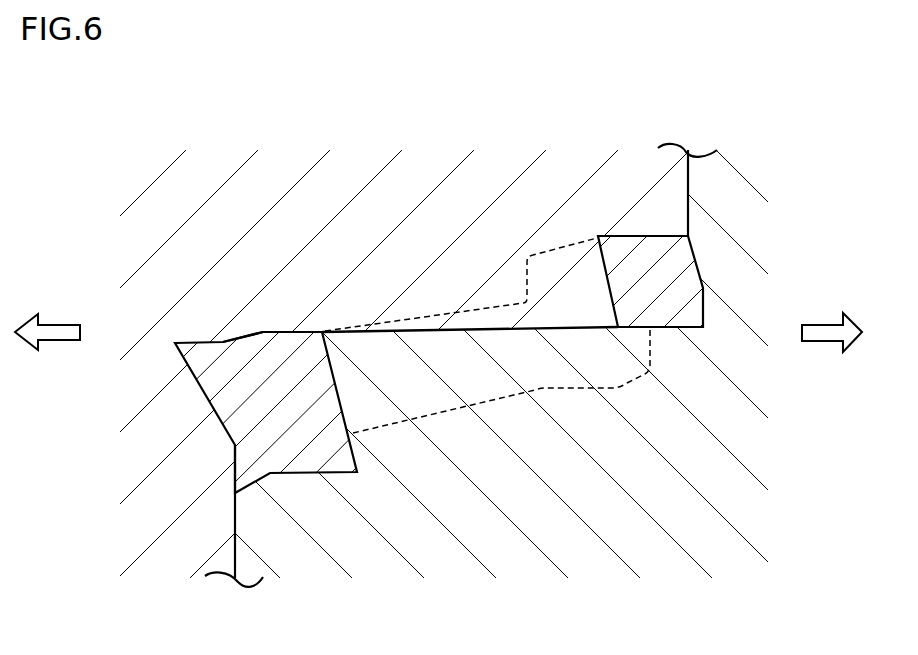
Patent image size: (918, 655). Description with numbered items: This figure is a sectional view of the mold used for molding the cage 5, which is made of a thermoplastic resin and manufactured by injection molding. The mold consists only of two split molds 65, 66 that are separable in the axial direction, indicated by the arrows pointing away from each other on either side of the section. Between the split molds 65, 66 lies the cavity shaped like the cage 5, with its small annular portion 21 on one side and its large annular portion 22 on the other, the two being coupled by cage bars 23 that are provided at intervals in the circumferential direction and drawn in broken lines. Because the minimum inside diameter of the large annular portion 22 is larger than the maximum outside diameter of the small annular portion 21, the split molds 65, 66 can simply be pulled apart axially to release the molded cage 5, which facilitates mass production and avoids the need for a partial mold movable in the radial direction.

The cage 5 is at (247, 331).
The small annular portion 21 is at (282, 350).
The large annular portion 22 is at (650, 254).
The cage bar 23 is at (575, 388).
The split mold 65 is at (430, 213).
The split mold 66 is at (465, 525).